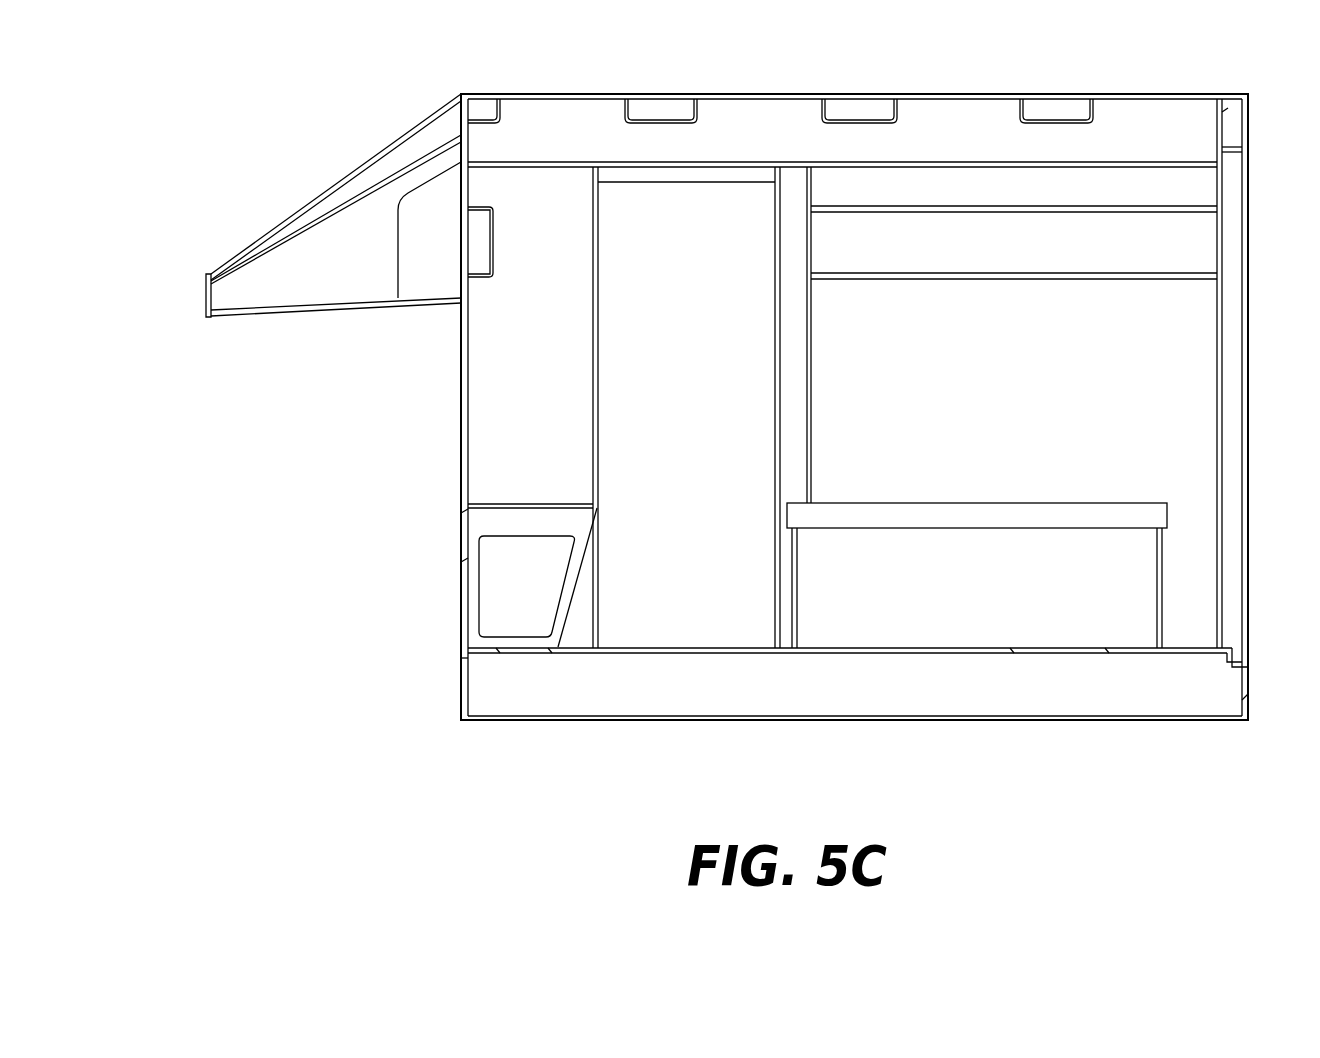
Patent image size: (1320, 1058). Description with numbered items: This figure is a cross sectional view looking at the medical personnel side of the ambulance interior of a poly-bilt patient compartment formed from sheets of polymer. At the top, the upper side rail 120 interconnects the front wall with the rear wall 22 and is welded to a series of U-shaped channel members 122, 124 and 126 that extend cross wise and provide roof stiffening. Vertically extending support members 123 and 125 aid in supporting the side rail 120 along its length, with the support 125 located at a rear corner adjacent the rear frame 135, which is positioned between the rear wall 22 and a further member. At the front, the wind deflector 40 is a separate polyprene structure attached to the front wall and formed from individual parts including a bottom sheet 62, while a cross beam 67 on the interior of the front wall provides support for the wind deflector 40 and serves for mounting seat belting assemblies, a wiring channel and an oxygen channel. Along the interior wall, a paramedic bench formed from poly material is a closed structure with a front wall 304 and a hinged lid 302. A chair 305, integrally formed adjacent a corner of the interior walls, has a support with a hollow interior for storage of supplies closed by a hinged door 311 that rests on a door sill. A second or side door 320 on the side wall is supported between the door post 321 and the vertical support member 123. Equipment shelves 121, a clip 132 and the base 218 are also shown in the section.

The rear wall 22 is at (1252, 306).
The wind deflector 40 is at (207, 268).
The bottom sheet 62 is at (334, 318).
The cross beam 67 is at (495, 240).
The upper side rail 120 is at (766, 118).
The shelves 121 is at (1020, 258).
The U-shaped channel member 122 is at (625, 110).
The vertically extending support member 123 is at (790, 384).
The U-shaped channel member 124 is at (856, 120).
The vertically extending support member 125 is at (1225, 490).
The U-shaped channel member 126 is at (1060, 120).
The clip 132 is at (488, 112).
The rear frame 135 is at (1228, 152).
The base 218 is at (974, 655).
The hinged lid 302 is at (1005, 505).
The front wall 304 is at (1055, 628).
The chair 305 is at (488, 513).
The hinged door 311 is at (495, 596).
The side door 320 is at (704, 530).
The door post 321 is at (572, 358).